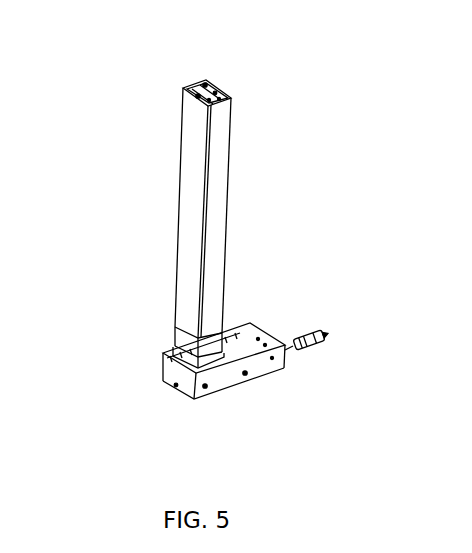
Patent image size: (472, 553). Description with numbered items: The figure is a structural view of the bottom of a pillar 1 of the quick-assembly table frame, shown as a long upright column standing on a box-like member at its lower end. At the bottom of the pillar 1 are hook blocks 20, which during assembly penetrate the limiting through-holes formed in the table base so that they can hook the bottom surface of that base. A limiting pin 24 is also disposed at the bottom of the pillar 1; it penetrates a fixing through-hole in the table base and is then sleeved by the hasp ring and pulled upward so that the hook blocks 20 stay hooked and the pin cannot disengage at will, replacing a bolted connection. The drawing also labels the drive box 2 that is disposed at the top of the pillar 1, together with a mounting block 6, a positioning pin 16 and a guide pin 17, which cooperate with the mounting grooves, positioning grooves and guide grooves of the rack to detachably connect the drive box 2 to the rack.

The pillar 1 is at (200, 199).
The drive box 2 is at (268, 347).
The mounting block 6 is at (292, 343).
The positioning pin 16 is at (238, 347).
The guide pin 17 is at (206, 388).
The hook block 20 is at (197, 97).
The limiting pin 24 is at (198, 85).